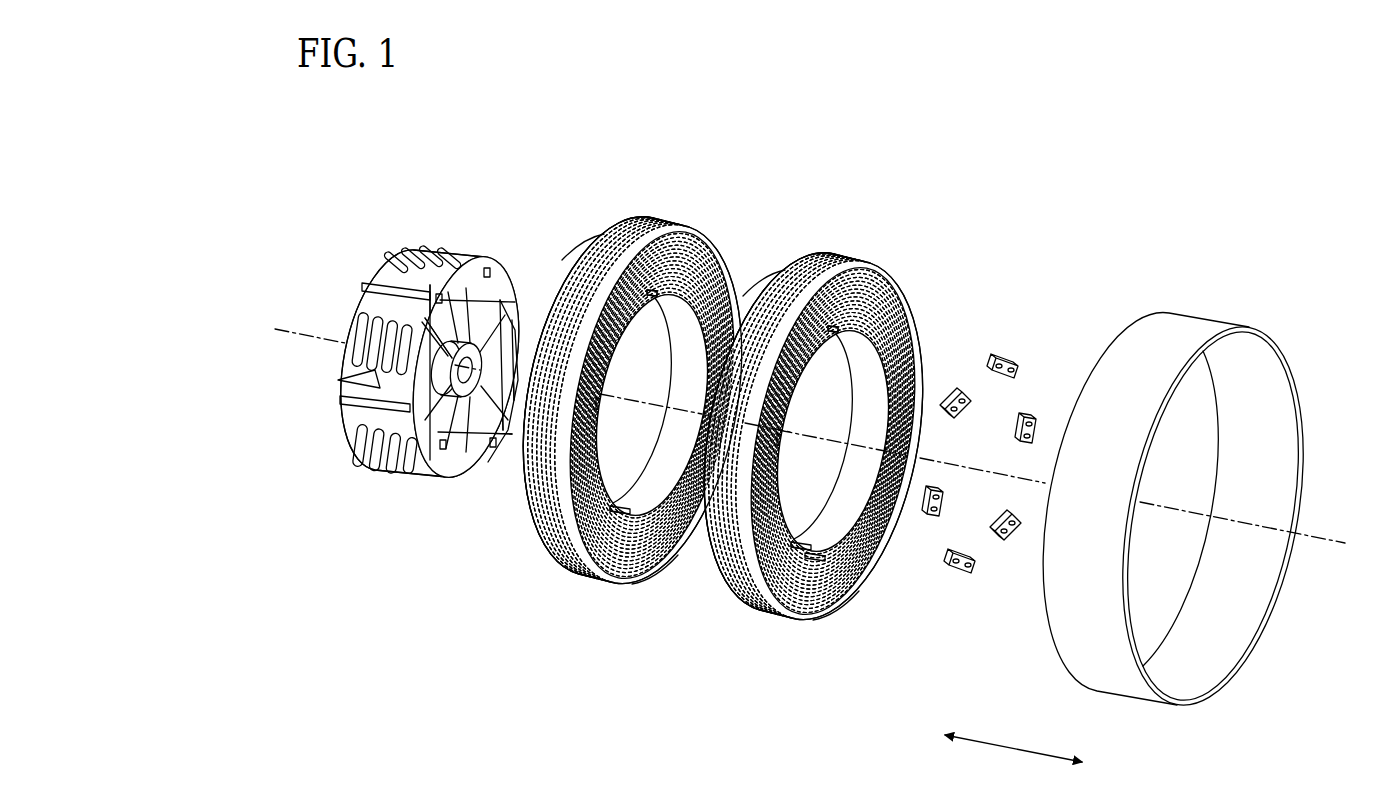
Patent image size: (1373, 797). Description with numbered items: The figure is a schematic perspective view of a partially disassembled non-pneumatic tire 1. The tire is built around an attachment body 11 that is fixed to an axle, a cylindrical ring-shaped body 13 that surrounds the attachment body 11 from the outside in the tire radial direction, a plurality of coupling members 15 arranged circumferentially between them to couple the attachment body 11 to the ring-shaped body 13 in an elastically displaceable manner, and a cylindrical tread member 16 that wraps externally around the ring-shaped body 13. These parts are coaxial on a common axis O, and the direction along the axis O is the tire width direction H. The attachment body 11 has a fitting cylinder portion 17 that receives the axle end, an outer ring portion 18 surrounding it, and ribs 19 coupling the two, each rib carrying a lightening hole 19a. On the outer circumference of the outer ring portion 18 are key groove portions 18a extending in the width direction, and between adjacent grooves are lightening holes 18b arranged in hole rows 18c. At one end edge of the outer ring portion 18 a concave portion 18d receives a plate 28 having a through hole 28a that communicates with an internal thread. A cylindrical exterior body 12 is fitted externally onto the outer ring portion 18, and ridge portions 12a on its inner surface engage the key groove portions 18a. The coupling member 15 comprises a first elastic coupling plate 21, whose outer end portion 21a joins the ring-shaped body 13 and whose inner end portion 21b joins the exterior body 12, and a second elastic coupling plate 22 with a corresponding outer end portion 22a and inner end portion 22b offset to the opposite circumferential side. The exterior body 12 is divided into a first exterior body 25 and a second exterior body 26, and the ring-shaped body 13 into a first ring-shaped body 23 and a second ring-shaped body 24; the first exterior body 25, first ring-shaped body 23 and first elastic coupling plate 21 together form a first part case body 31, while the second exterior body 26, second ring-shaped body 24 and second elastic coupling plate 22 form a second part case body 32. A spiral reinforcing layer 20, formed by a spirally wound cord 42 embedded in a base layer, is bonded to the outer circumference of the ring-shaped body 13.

The non-pneumatic tire 1 is at (1127, 155).
The axis O is at (298, 333).
The tire width direction H is at (1013, 759).
The attachment body 11 is at (422, 226).
The exterior body 12 is at (775, 338).
The ridge portion 12a is at (690, 348).
The ring-shaped body 13 is at (722, 368).
The coupling member 15 is at (742, 371).
The tread member 16 is at (1207, 310).
The fitting cylinder portion 17 is at (462, 346).
The outer ring portion 18 is at (401, 343).
The key groove portion 18a is at (376, 283).
The lightening hole 18b is at (388, 383).
The hole row 18c is at (352, 322).
The concave portion 18d is at (438, 296).
The rib 19 is at (448, 424).
The lightening hole 19a is at (450, 425).
The spiral reinforcing layer 20 is at (540, 542).
The first elastic coupling plate 21 is at (833, 403).
The outer end portion 21a is at (845, 592).
The inner end portion 21b is at (818, 552).
The second elastic coupling plate 22 is at (643, 370).
The outer end portion 22a is at (655, 570).
The inner end portion 22b is at (598, 398).
The first ring-shaped body 23 is at (849, 248).
The second ring-shaped body 24 is at (657, 224).
The first exterior body 25 is at (861, 344).
The second exterior body 26 is at (672, 306).
The plate 28 is at (998, 470).
The through hole 28a is at (1017, 372).
The first part case body 31 is at (836, 383).
The second part case body 32 is at (644, 351).
The cord 42 is at (607, 232).